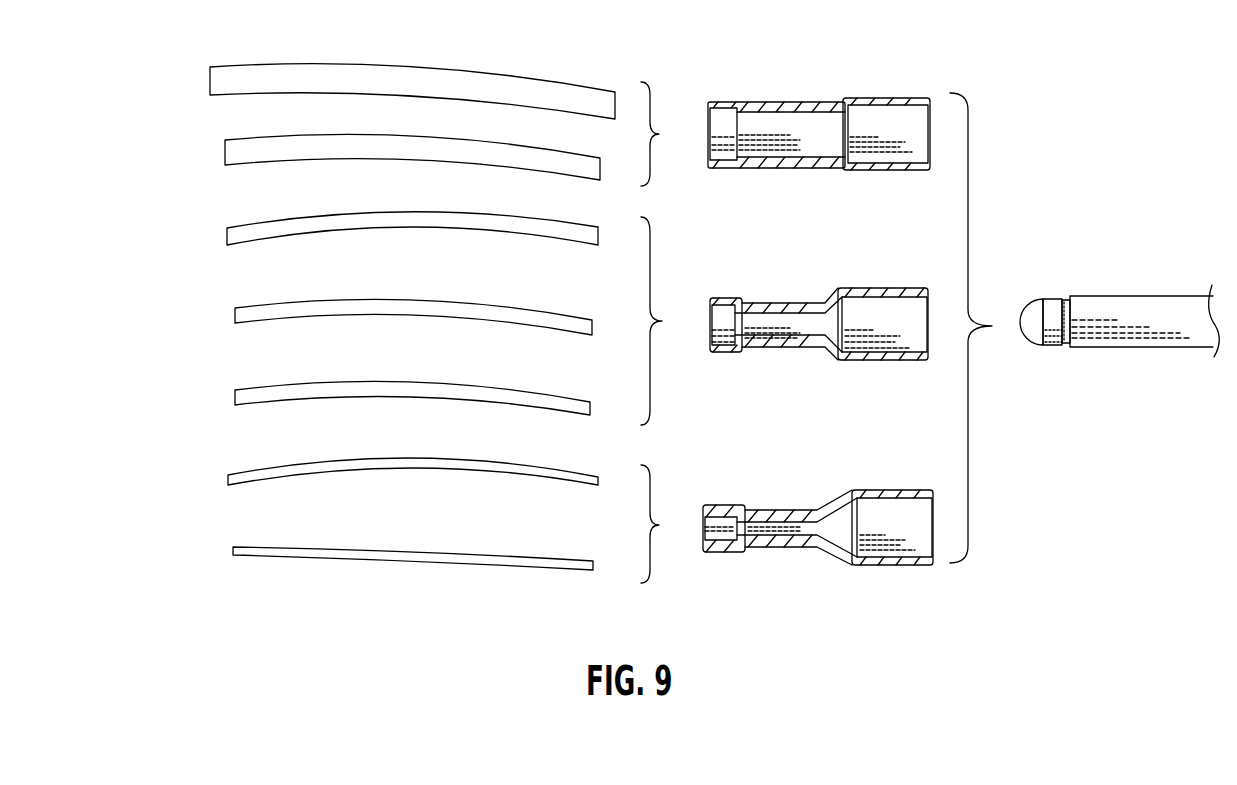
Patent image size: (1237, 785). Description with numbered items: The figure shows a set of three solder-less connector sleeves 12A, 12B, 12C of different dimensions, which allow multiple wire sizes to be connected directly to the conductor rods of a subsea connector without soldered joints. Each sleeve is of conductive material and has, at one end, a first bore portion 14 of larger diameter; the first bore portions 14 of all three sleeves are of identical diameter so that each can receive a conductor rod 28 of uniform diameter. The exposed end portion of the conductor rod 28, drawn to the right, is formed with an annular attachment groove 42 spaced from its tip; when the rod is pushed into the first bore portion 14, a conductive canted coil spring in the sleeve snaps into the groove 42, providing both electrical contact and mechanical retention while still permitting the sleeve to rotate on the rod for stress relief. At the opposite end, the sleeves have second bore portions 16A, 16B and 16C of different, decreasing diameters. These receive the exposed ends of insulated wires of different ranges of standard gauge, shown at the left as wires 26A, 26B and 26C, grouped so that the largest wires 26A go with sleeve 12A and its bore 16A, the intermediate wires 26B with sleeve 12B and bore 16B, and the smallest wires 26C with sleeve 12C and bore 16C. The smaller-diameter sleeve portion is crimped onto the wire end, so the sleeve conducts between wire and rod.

The standard gauge wire 26A is at (400, 77).
The standard gauge wire 26B is at (400, 218).
The standard gauge wire 26C is at (400, 463).
The connector sleeve 12A is at (834, 101).
The connector sleeve 12B is at (835, 298).
The connector sleeve 12C is at (831, 504).
The second bore portion 16A is at (766, 120).
The second bore portion 16B is at (766, 319).
The second bore portion 16C is at (766, 524).
The first bore portion 14 is at (880, 110).
The conductor rod 28 is at (1153, 303).
The annular attachment groove 42 is at (1070, 298).